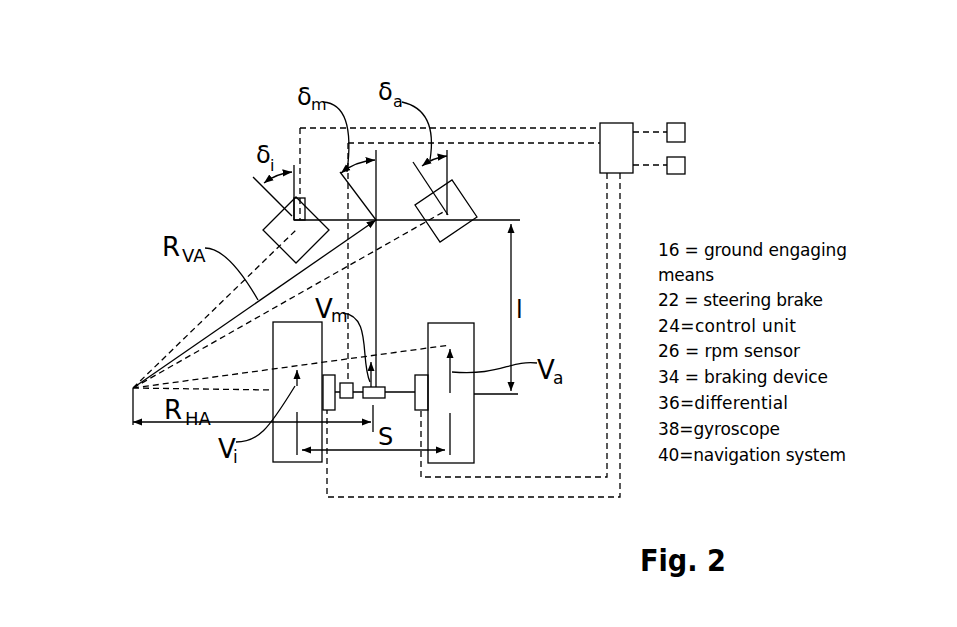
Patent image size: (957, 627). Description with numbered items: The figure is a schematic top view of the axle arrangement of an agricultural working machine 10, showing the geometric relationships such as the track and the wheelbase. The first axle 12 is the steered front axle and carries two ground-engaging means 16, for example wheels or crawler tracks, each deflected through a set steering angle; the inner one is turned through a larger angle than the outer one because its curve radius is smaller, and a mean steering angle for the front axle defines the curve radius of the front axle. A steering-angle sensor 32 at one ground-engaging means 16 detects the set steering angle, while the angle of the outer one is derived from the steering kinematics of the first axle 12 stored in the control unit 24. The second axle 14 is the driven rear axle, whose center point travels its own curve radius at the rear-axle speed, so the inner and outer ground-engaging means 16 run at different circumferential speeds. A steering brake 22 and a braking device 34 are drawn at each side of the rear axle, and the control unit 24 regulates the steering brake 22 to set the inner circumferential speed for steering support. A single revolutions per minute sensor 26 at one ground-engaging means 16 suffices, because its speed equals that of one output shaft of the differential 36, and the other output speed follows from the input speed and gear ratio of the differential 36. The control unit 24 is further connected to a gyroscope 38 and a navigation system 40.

The agricultural working machine 10 is at (466, 113).
The first axle 12 is at (398, 213).
The second axle 14 is at (404, 377).
The ground-engaging means 16 is at (277, 230).
The steering brake 22 is at (366, 466).
The control unit 24 is at (612, 135).
The revolutions per minute sensor 26 is at (347, 400).
The steering-angle sensor 32 is at (302, 213).
The braking device 34 is at (415, 400).
The differential 36 is at (378, 387).
The gyroscope 38 is at (677, 132).
The navigation system 40 is at (677, 165).